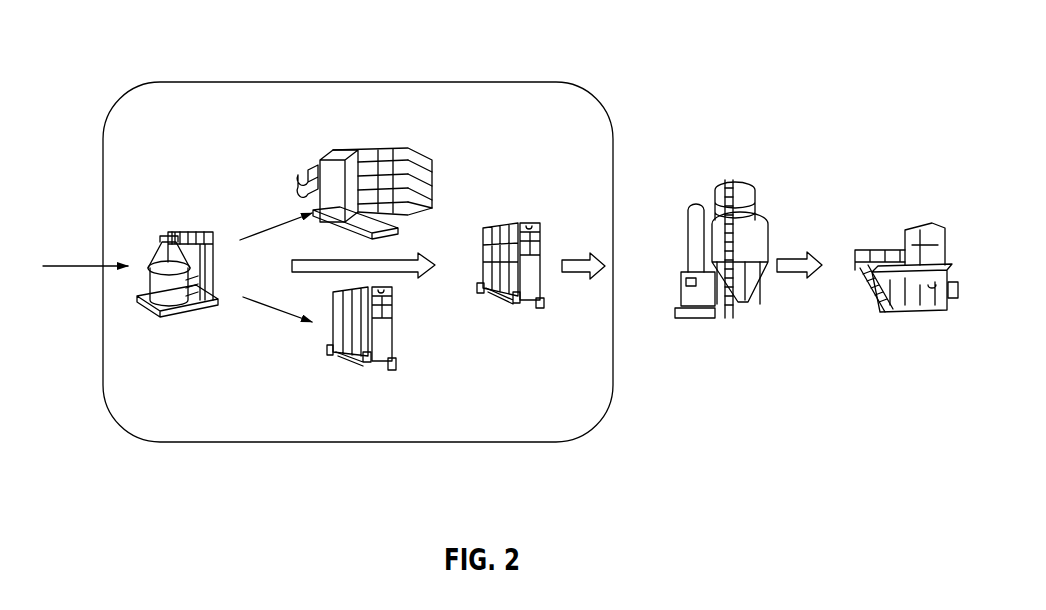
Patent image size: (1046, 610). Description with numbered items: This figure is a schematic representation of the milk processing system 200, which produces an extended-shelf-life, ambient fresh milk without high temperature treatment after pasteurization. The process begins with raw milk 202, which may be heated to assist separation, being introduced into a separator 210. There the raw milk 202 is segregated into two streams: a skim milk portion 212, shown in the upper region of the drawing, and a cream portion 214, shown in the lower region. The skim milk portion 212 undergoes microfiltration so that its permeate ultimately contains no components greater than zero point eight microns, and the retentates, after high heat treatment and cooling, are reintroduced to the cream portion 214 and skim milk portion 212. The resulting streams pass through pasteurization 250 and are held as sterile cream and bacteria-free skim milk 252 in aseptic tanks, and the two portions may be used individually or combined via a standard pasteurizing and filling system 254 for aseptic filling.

The milk processing system 200 is at (670, 78).
The raw milk 202 is at (80, 262).
The separator 210 is at (177, 230).
The skim milk portion 212 is at (358, 91).
The cream portion 214 is at (373, 442).
The pasteurization unit 250 is at (540, 368).
The bacteria-free skim milk 252 is at (728, 390).
The pasteurizing and filling system 254 is at (906, 390).